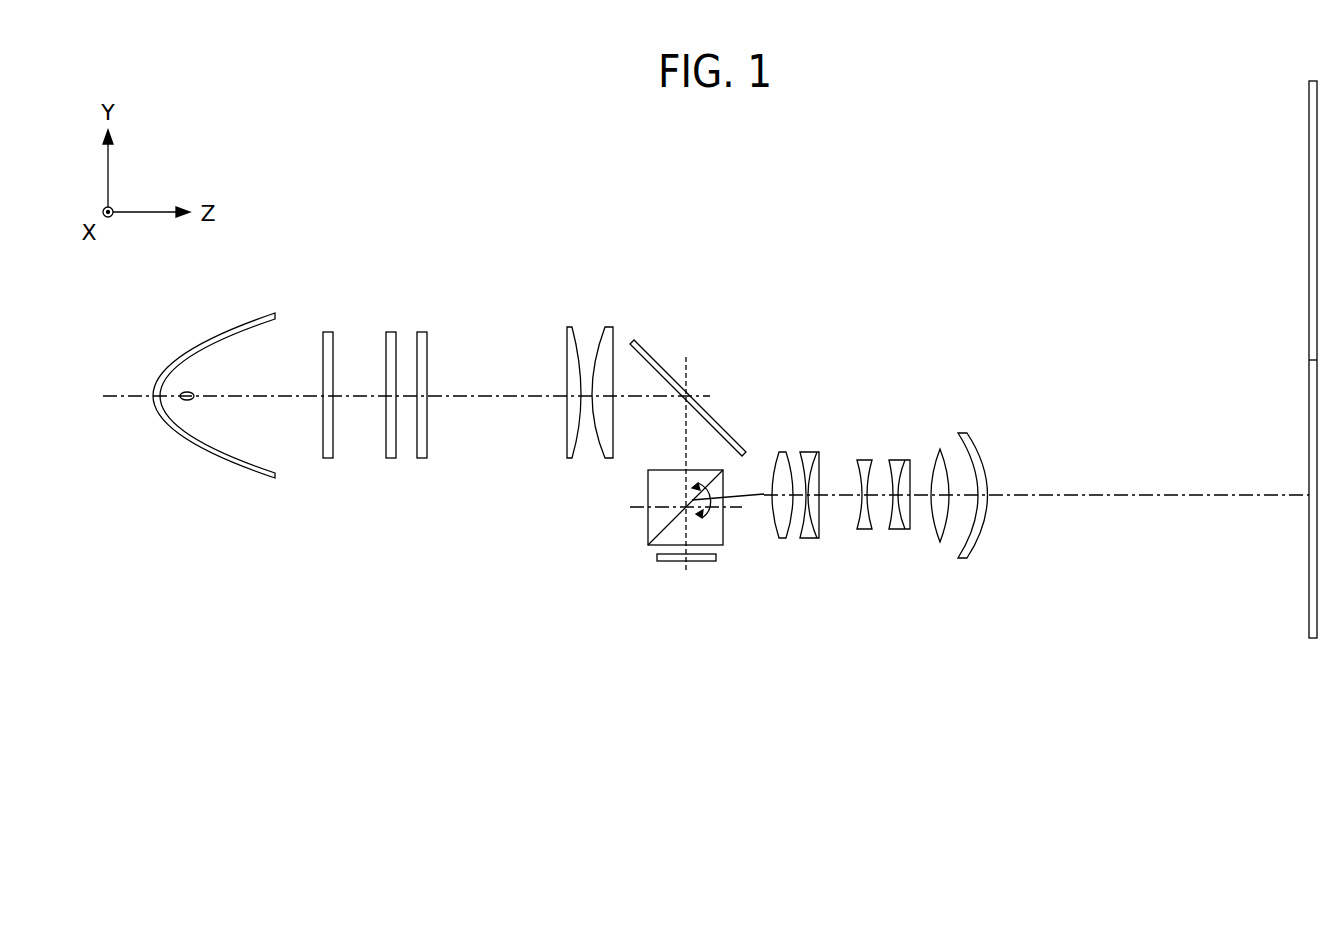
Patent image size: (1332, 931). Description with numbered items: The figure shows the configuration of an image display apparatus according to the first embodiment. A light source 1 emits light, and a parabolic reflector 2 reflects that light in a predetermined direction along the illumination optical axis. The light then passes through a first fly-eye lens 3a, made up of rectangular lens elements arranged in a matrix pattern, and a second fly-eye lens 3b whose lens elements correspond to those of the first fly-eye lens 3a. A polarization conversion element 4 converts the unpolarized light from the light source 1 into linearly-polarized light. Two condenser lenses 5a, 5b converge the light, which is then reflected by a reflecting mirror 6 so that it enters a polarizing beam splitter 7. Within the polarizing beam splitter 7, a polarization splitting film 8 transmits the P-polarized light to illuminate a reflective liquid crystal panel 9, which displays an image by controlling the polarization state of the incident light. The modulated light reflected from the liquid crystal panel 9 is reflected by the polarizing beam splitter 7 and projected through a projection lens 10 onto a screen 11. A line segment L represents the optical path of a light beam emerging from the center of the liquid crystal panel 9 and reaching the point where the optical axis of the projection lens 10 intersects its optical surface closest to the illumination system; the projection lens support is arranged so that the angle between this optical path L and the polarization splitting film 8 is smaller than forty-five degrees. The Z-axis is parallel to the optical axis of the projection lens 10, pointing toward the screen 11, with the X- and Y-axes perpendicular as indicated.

The light source 1 is at (190, 391).
The reflector 2 is at (186, 452).
The first fly-eye lens 3a is at (322, 460).
The second fly-eye lens 3b is at (385, 460).
The polarization conversion element 4 is at (423, 460).
The condenser lens 5a is at (570, 327).
The condenser lens 5b is at (610, 327).
The reflecting mirror 6 is at (651, 355).
The polarizing beam splitter 7 is at (648, 515).
The polarization splitting film 8 is at (702, 472).
The reflective liquid crystal panel 9 is at (657, 556).
The projection lens 10 is at (755, 556).
The screen 11 is at (1310, 280).
The optical path L is at (690, 522).